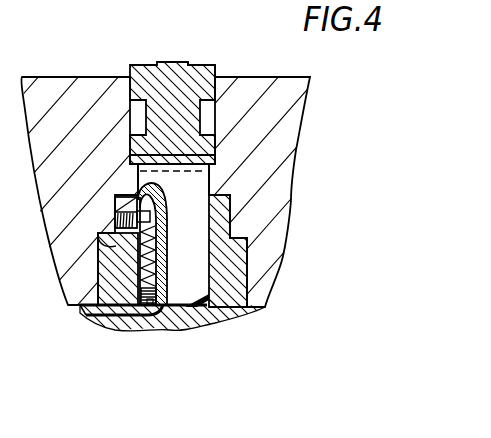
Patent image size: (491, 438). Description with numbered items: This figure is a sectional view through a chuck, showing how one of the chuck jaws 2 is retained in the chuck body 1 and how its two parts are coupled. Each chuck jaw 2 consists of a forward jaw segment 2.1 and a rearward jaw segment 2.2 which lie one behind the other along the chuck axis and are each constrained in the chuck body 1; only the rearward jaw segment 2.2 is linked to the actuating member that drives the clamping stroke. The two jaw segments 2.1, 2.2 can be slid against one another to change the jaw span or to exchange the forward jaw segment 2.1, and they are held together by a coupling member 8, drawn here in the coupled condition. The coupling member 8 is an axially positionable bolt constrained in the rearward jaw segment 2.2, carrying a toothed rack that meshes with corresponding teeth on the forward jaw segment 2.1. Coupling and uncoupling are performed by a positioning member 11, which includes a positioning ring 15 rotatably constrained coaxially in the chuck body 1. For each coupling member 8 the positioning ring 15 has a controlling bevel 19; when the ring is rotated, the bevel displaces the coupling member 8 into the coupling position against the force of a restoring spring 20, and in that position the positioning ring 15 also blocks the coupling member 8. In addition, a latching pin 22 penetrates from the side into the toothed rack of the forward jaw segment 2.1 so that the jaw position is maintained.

The chuck body 1 is at (280, 150).
The chuck jaw 2 is at (137, 56).
The forward jaw segment 2.1 is at (210, 64).
The rearward jaw segment 2.2 is at (240, 255).
The coupling member 8 is at (190, 238).
The positioning member 11 is at (192, 312).
The positioning ring 15 is at (223, 320).
The controlling bevel 19 is at (156, 322).
The restoring spring 20 is at (112, 232).
The latching pin 22 is at (100, 298).